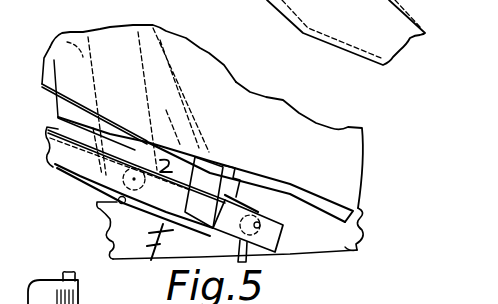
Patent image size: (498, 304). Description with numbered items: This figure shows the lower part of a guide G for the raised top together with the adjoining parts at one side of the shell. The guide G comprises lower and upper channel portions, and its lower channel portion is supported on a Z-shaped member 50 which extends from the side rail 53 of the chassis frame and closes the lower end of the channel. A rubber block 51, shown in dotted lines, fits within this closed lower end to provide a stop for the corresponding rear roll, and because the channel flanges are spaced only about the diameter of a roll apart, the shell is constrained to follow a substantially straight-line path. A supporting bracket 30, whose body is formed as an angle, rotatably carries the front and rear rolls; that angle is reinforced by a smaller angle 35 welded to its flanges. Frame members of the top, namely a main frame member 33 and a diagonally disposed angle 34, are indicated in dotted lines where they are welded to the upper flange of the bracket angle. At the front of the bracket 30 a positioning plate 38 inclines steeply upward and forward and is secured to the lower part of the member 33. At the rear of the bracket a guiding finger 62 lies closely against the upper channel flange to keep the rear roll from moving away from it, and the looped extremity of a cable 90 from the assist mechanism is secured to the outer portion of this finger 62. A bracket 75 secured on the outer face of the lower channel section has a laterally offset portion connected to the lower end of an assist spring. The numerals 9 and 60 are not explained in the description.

The housing top wall 9 is at (139, 42).
The diagonally disposed angle 34 is at (183, 90).
The cover flap 60 is at (346, 32).
The main frame member 33 is at (78, 45).
The cable 90 is at (182, 172).
The positioning plate 38 is at (113, 107).
The rubber block 51 is at (273, 216).
The bracket 75 is at (228, 168).
The Z-shaped member 50 is at (283, 238).
The supporting bracket 30 is at (131, 218).
The smaller angle 35 is at (166, 238).
The side rail 53 is at (357, 250).
The positioning element or guiding finger 62 is at (75, 283).
The guide G is at (71, 186).